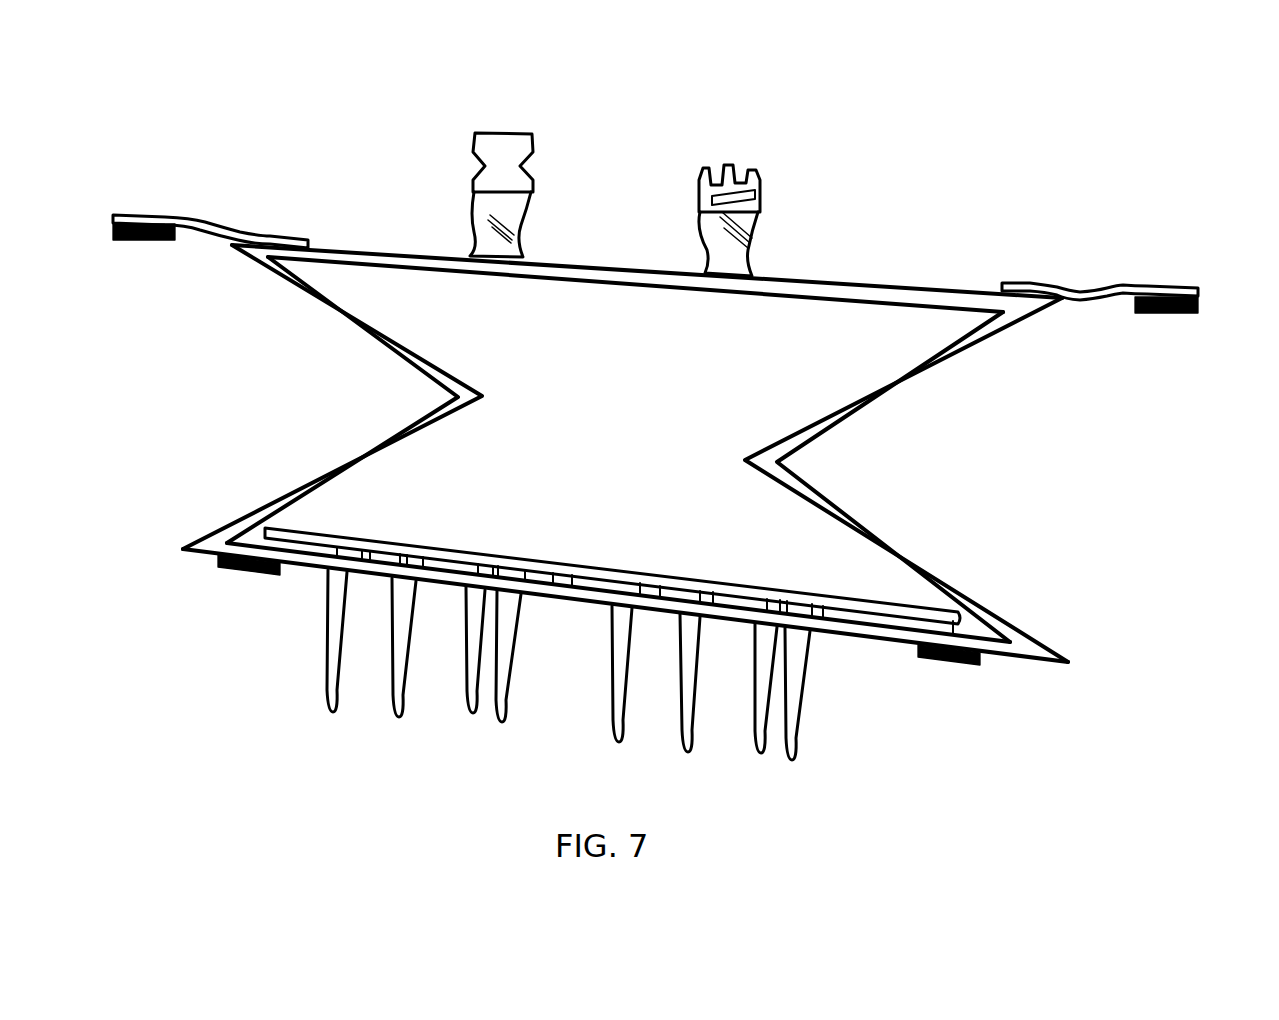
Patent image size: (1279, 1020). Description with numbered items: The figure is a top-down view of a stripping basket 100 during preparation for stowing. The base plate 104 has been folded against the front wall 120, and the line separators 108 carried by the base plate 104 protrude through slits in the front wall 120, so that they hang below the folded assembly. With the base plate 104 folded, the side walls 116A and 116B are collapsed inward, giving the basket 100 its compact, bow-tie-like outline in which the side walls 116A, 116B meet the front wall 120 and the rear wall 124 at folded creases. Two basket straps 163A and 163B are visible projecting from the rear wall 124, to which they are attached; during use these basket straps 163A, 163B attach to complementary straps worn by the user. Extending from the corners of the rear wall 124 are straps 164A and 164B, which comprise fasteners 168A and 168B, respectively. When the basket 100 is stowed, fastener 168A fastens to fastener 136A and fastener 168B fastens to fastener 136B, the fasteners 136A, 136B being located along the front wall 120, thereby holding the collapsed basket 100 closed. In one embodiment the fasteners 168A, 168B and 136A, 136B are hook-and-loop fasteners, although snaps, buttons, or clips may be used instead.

The stripping basket 100 is at (215, 114).
The base plate 104 is at (583, 567).
The line separators 108 is at (800, 742).
The side wall 116A is at (393, 445).
The side wall 116B is at (854, 513).
The front wall 120 is at (838, 645).
The rear wall 124 is at (866, 282).
The fastener 136A is at (265, 578).
The fastener 136B is at (940, 663).
The basket strap 163A is at (477, 197).
The basket strap 163B is at (750, 232).
The strap 164A is at (207, 223).
The strap 164B is at (1085, 286).
The fastener 168A is at (148, 241).
The fastener 168B is at (1165, 312).